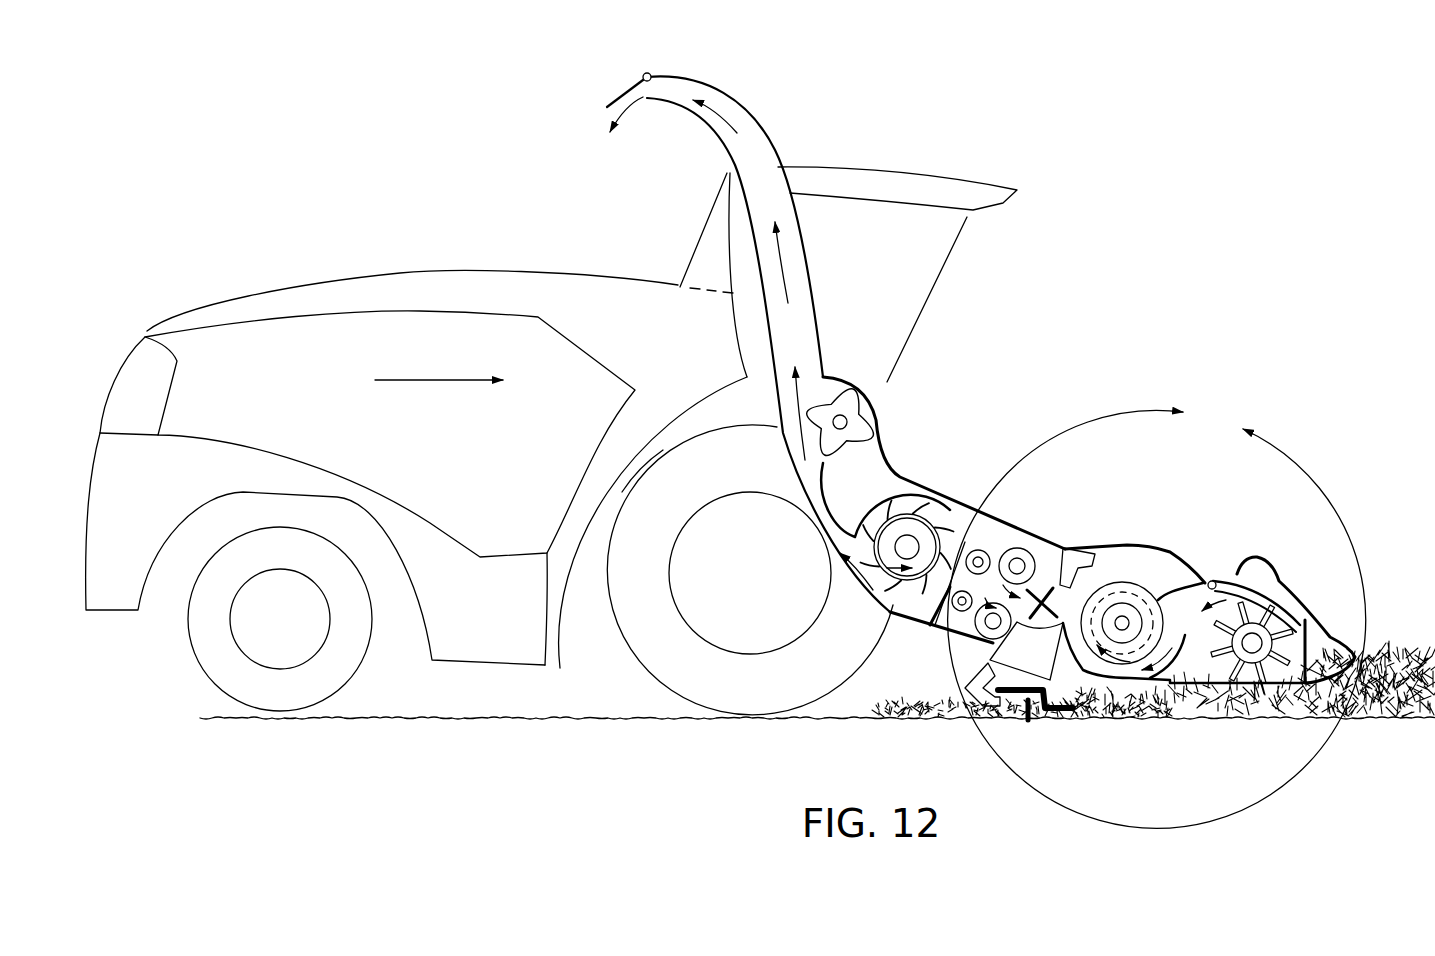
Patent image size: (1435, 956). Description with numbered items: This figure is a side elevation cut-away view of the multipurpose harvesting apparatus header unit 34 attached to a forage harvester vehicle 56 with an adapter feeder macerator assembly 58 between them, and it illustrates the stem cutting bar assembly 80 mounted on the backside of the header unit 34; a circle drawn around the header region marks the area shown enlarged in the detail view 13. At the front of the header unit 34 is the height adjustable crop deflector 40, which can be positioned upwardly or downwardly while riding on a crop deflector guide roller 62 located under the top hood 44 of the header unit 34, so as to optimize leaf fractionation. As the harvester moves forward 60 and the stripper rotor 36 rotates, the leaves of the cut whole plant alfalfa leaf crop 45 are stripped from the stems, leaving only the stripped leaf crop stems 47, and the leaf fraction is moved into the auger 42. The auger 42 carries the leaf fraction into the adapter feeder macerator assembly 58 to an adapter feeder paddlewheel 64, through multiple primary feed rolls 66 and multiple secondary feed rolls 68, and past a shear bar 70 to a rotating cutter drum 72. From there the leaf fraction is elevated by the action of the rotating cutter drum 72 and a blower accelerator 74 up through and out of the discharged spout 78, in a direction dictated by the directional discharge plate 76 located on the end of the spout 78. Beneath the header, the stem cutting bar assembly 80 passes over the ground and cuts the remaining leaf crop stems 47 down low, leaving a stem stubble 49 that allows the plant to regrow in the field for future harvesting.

The detail view circle (FIG. 13) 13 is at (1157, 613).
The multipurpose harvesting apparatus header unit 34 is at (1098, 250).
The stripper rotor 36 is at (1265, 637).
The height adjustable crop deflector 40 is at (1345, 655).
The auger 42 is at (1130, 602).
The top hood 44 is at (1177, 547).
The whole plant alfalfa leaf crop 45 is at (1381, 704).
The stripped leaf crop stems 47 is at (1225, 715).
The stem stubble 49 is at (913, 712).
The forage harvester vehicle 56 is at (935, 183).
The adapter feeder macerator assembly 58 is at (1075, 547).
The forward movement of the harvester 60 is at (450, 377).
The crop deflector guide roller 62 is at (1212, 580).
The adapter feeder paddlewheel 64 is at (1075, 568).
The primary feed rolls 66 is at (1022, 560).
The guide roller 68 is at (980, 550).
The shear bar 70 is at (893, 607).
The rotating cutter drum 72 is at (960, 530).
The blower accelerator 74 is at (853, 408).
The directional discharge plate 76 is at (608, 100).
The discharged spout 78 is at (753, 147).
The stem cutting bar assembly 80 is at (1047, 737).